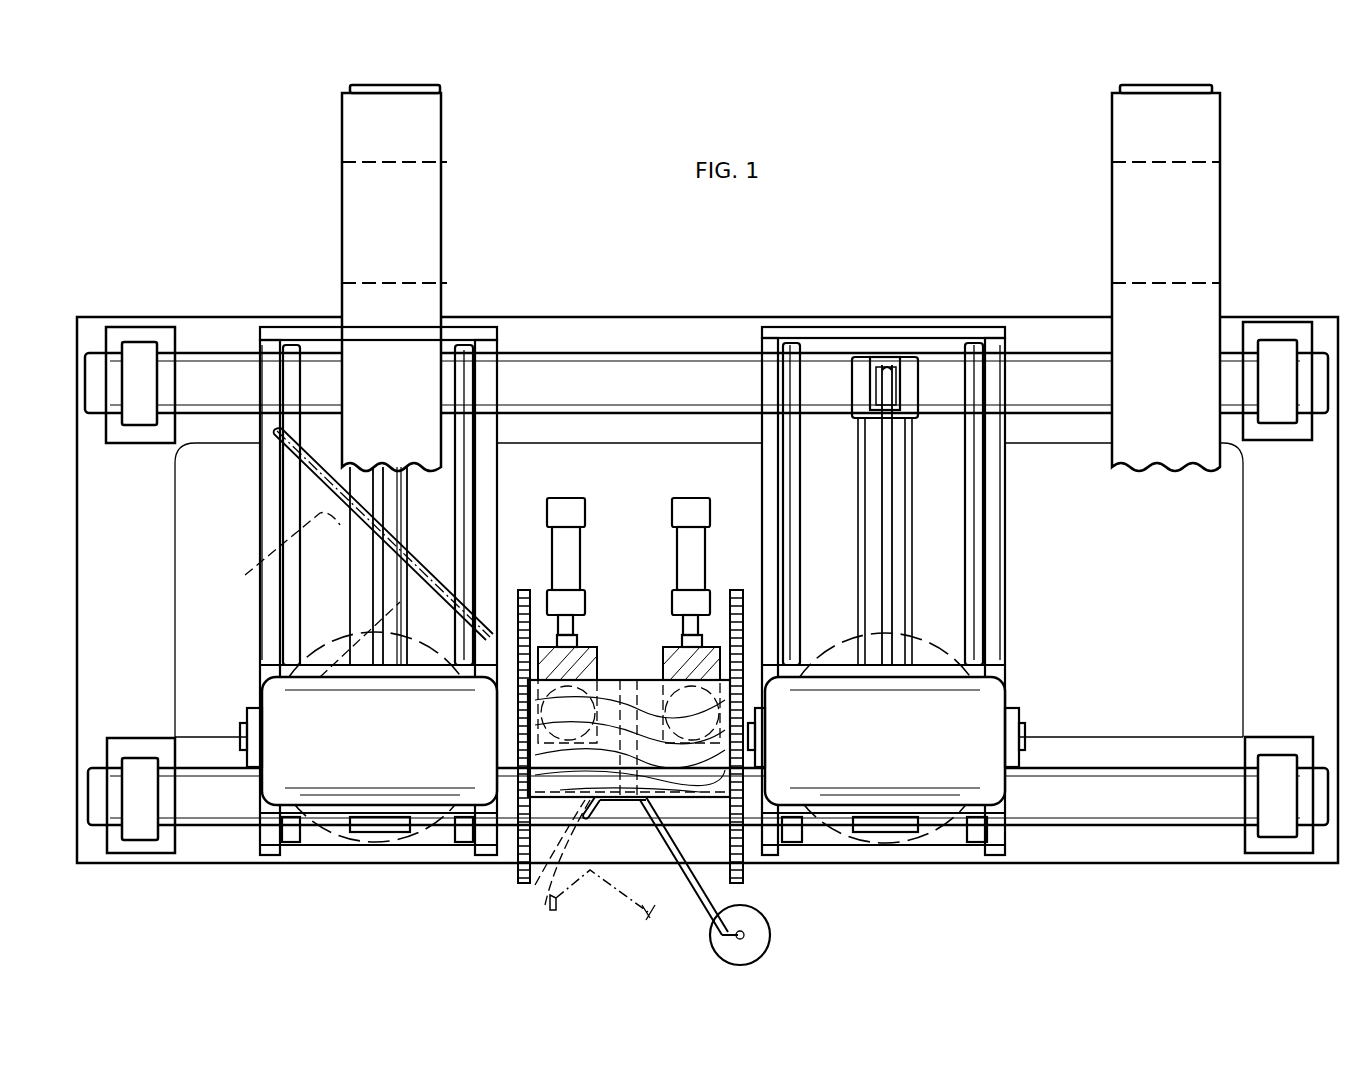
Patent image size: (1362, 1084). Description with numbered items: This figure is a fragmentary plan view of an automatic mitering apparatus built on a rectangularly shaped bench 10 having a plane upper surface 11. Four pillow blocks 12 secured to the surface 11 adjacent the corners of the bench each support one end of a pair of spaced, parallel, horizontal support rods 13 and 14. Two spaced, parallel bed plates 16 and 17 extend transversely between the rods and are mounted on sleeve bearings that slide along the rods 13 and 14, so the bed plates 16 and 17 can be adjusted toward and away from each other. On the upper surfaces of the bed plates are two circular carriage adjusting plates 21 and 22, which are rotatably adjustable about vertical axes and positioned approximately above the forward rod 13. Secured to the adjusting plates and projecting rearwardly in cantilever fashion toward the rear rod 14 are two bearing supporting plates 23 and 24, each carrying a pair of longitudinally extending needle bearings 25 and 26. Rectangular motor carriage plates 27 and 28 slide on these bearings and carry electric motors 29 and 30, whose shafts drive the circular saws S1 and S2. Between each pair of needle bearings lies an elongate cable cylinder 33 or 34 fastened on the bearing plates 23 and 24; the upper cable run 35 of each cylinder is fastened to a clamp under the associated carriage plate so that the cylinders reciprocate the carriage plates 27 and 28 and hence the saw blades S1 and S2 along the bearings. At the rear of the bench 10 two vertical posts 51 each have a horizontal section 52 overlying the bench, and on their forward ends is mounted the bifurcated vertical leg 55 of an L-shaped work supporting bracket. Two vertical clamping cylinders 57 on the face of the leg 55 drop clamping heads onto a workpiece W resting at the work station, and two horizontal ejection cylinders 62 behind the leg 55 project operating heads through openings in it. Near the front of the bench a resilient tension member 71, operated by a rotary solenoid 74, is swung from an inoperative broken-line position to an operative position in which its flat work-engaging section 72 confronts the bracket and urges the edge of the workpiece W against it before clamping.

The bench 10 is at (659, 306).
The upper surface 11 is at (1293, 584).
The pillow blocks 12 is at (115, 330).
The support rod 13 is at (1098, 822).
The support rod 14 is at (1042, 355).
The bed plate 16 is at (470, 327).
The bed plate 17 is at (805, 327).
The carriage adjusting plate 21 is at (322, 820).
The carriage adjusting plate 22 is at (948, 820).
The bearing supporting plate 23 is at (260, 487).
The bearing supporting plate 24 is at (1000, 510).
The needle bearings 25 is at (460, 380).
The needle bearings 26 is at (965, 360).
The motor carriage plate 27 is at (262, 668).
The motor carriage plate 28 is at (1005, 668).
The electric motor 29 is at (243, 580).
The electric motor 30 is at (947, 748).
The cable cylinder 33 is at (404, 527).
The cable cylinder 34 is at (862, 487).
The upper cable run 35 is at (378, 487).
The posts 51 is at (412, 162).
The horizontal section 52 is at (405, 328).
The bifurcated leg 55 is at (660, 655).
The clamping cylinders 57 is at (640, 688).
The ejection cylinders 62 is at (672, 510).
The resilient tension member 71 is at (662, 838).
The work-engaging section 72 is at (621, 805).
The rotary solenoid 74 is at (772, 925).
The circular saw S1 is at (518, 878).
The circular saw S2 is at (743, 878).
The workpiece W is at (620, 800).